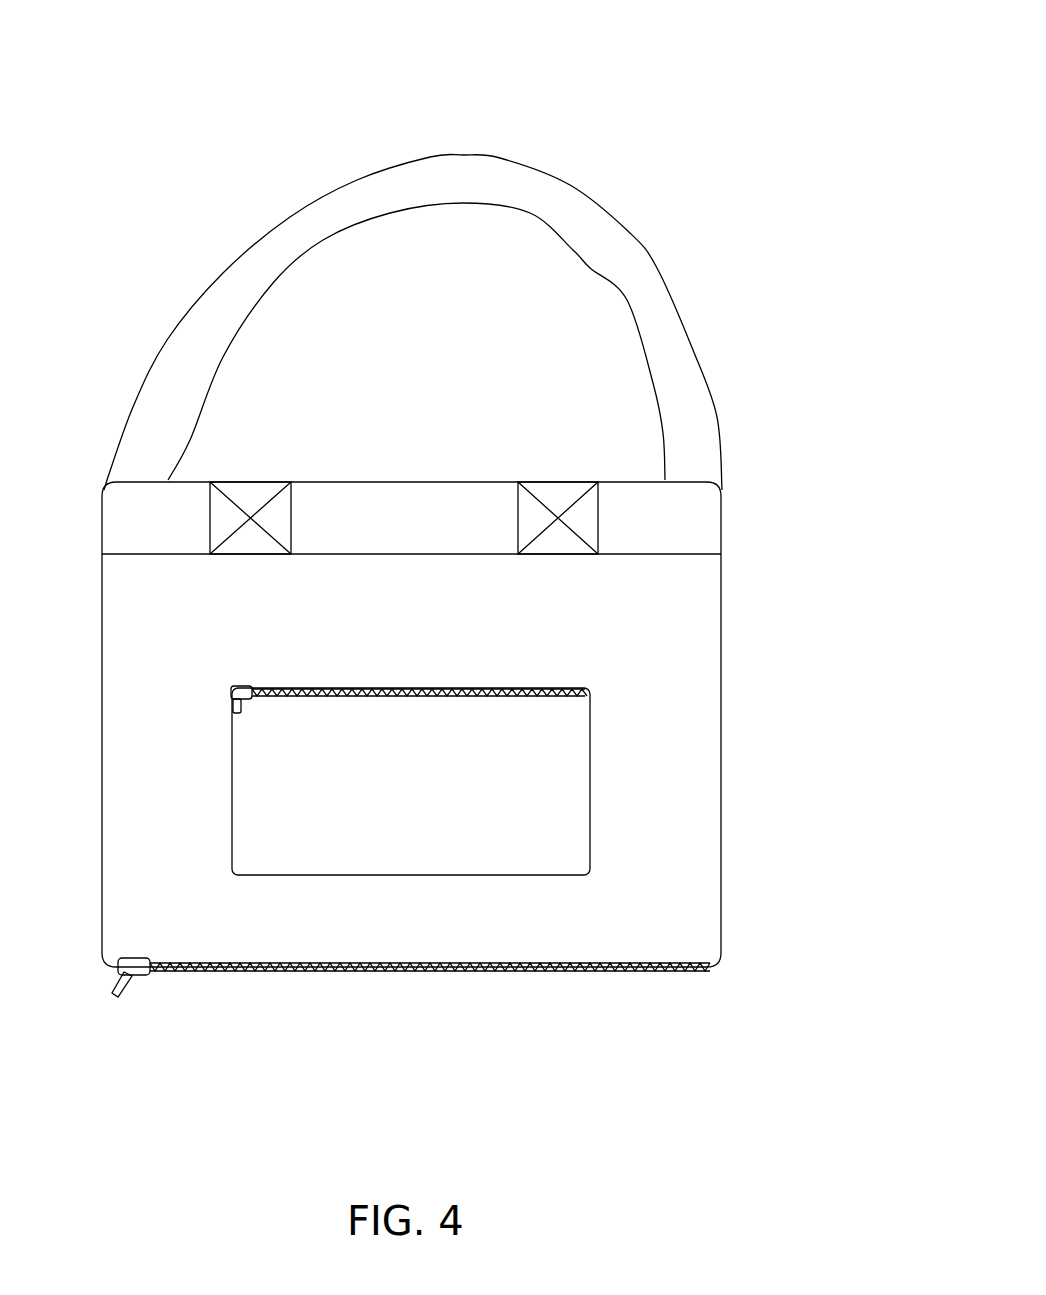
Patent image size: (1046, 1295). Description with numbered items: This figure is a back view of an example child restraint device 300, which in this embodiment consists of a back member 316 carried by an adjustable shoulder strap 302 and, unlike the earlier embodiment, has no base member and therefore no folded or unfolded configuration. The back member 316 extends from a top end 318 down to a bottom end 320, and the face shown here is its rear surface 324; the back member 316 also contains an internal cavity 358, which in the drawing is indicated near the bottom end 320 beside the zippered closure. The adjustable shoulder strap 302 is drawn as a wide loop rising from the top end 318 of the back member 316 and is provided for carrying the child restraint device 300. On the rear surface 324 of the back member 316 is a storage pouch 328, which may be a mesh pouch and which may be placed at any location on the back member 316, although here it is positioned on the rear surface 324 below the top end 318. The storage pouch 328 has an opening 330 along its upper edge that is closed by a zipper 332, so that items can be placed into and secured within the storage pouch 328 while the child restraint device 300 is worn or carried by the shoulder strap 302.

The child restraint device 300 is at (738, 25).
The adjustable shoulder strap 302 is at (632, 233).
The back member 316 is at (747, 710).
The top end 318 is at (435, 455).
The rear surface 324 is at (472, 619).
The storage pouch 328 is at (232, 790).
The opening 330 is at (278, 685).
The zipper 332 is at (462, 688).
The bottom end 320 is at (408, 1028).
The internal cavity 358 is at (290, 988).